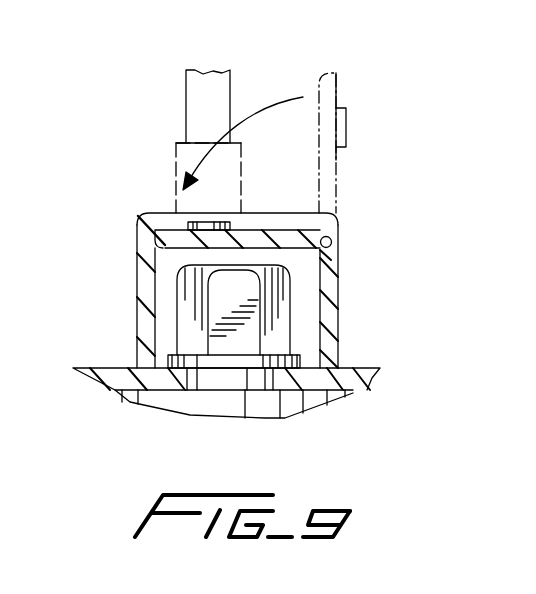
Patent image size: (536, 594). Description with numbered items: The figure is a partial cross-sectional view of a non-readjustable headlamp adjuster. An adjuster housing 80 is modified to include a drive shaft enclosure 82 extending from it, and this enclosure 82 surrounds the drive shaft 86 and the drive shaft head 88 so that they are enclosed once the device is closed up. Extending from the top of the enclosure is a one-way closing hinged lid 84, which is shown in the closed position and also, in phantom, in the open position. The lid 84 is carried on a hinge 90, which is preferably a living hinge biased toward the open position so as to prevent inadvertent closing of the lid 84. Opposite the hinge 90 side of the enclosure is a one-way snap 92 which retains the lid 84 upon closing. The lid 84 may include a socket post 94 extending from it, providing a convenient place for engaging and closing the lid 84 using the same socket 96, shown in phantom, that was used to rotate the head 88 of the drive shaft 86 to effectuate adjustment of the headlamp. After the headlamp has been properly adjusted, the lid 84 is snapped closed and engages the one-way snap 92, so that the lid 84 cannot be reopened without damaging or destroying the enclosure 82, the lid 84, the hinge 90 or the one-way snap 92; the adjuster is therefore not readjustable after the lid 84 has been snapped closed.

The adjuster housing 80 is at (358, 378).
The drive shaft enclosure 82 is at (328, 322).
The one-way closing hinged lid 84 is at (330, 167).
The drive shaft 86 is at (218, 383).
The drive shaft head 88 is at (232, 303).
The hinge 90 is at (331, 237).
The one-way snap 92 is at (158, 212).
The socket post 94 is at (346, 127).
The socket 96 is at (203, 83).